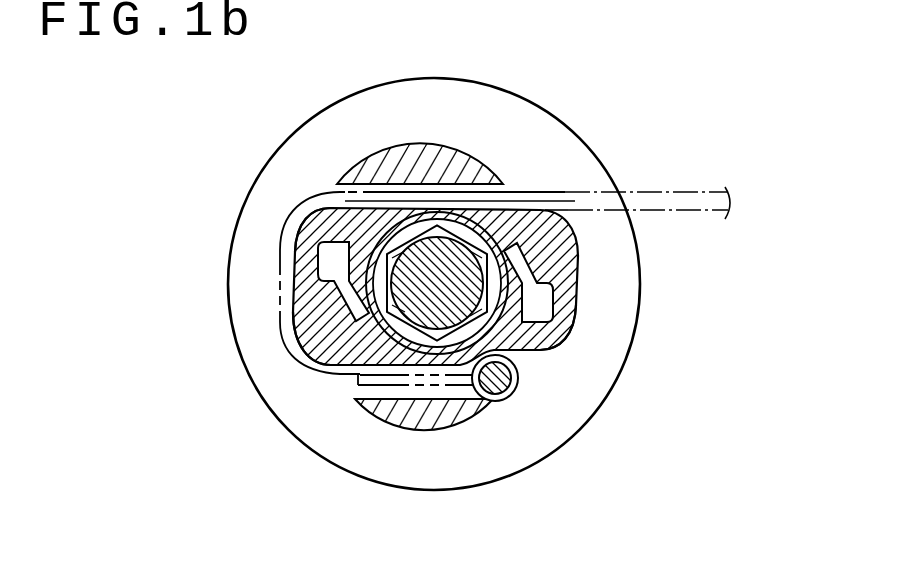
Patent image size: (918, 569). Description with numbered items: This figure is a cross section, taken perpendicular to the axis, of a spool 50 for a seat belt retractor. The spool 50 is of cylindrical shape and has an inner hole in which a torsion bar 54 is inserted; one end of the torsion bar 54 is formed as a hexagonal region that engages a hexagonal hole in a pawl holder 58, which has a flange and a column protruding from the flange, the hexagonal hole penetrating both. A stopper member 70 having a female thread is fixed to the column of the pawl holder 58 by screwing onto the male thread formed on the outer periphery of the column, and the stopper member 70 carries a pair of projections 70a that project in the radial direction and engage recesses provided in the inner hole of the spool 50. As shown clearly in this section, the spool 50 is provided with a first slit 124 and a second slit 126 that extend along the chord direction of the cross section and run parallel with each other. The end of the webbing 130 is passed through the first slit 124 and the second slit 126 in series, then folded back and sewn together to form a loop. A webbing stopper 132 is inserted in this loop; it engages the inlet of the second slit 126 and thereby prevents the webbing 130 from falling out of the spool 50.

The spool 50 is at (233, 199).
The torsion bar 54 is at (312, 327).
The pawl holder 58 is at (560, 352).
The stopper member 70 is at (573, 260).
The projection 70a is at (555, 305).
The first slit 124 is at (498, 192).
The second slit 126 is at (350, 390).
The webbing 130 is at (680, 193).
The webbing stopper 132 is at (520, 386).